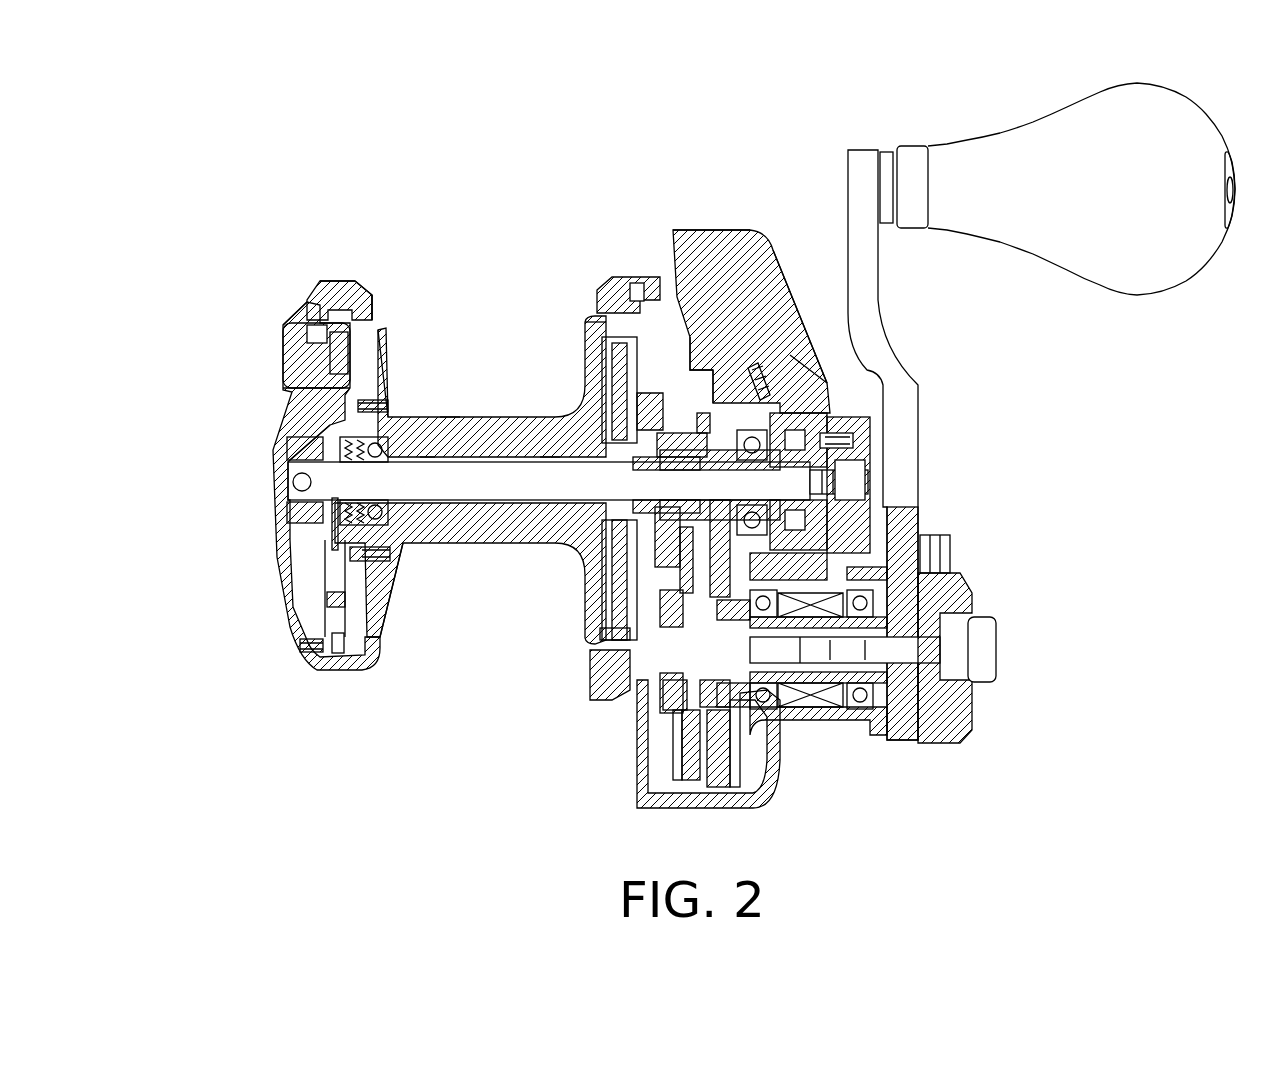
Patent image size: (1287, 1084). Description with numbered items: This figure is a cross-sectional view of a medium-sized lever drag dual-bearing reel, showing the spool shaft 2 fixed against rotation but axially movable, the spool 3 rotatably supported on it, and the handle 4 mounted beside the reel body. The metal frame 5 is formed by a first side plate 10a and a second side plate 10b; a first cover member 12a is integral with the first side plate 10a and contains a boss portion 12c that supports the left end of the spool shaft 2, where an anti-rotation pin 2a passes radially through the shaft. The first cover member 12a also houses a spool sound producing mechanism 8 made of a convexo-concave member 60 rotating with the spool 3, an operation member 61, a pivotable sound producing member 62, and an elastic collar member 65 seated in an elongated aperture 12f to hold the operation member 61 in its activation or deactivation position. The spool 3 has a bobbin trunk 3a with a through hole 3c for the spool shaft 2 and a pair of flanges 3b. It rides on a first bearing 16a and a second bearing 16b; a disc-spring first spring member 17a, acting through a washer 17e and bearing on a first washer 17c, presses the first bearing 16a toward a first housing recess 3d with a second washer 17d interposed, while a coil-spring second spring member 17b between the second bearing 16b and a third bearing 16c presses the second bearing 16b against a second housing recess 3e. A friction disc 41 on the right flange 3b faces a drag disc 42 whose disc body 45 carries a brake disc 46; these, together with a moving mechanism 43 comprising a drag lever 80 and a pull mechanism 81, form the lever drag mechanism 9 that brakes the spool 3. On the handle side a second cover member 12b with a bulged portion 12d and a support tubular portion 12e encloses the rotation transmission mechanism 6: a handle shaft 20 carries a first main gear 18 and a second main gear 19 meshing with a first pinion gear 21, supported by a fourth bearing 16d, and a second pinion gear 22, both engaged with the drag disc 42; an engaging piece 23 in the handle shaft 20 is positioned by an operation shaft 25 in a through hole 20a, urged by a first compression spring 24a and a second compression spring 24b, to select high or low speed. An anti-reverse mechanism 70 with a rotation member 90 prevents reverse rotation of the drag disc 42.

The spool shaft 2 is at (498, 472).
The anti-rotation pin 2a is at (286, 497).
The spool 3 is at (478, 408).
The bobbin trunk 3a is at (450, 412).
The flanges 3b is at (383, 340).
The through hole 3c is at (427, 417).
The first housing recess 3d is at (402, 528).
The second housing recess 3e is at (547, 447).
The handle 4 is at (907, 365).
The frame 5 is at (372, 258).
The rotation transmission mechanism 6 is at (700, 793).
The spool sound producing mechanism 8 is at (287, 310).
The lever drag mechanism 9 is at (788, 247).
The first side plate 10a is at (372, 300).
The second side plate 10b is at (613, 277).
The first cover member 12a is at (323, 280).
The second cover member 12b is at (643, 293).
The boss portion 12c is at (275, 517).
The bulged portion 12d is at (760, 795).
The support tubular portion 12e is at (833, 722).
The elongated aperture 12f is at (283, 332).
The first bearing 16a is at (357, 533).
The second bearing 16b is at (557, 550).
The third bearing 16c is at (563, 447).
The fourth bearing 16d is at (840, 400).
The first spring member 17a is at (337, 545).
The second spring member 17b is at (617, 577).
The first washer 17c is at (330, 448).
The second washer 17d is at (396, 415).
The washer 17e is at (355, 542).
The first main gear 18 is at (730, 810).
The second main gear 19 is at (677, 782).
The handle shaft 20 is at (807, 697).
The through hole 20a is at (970, 583).
The first pinion gear 21 is at (800, 358).
The second pinion gear 22 is at (780, 298).
The engaging piece 23 is at (680, 700).
The first compression spring 24a is at (680, 708).
The second compression spring 24b is at (687, 773).
The operation shaft 25 is at (985, 647).
The friction disc 41 is at (587, 642).
The drag disc 42 is at (628, 283).
The moving mechanism 43 is at (640, 662).
The disc body 45 is at (664, 388).
The brake disc 46 is at (577, 625).
The convexo-concave member 60 is at (330, 428).
The operation member 61 is at (283, 357).
The sound producing member 62 is at (310, 390).
The collar member 65 is at (308, 312).
The anti-reverse mechanism 70 is at (698, 355).
The drag lever 80 is at (745, 300).
The pull mechanism 81 is at (716, 370).
The rotation member 90 is at (685, 426).